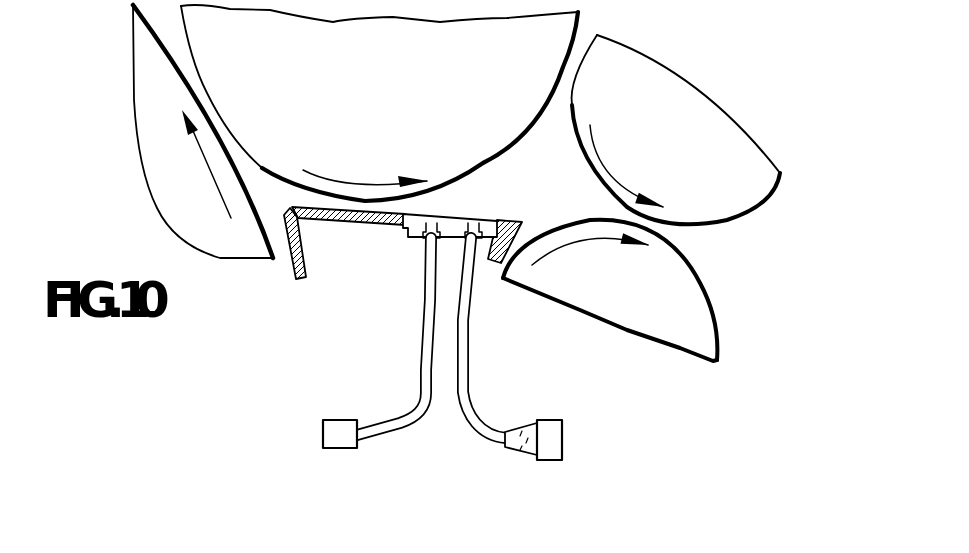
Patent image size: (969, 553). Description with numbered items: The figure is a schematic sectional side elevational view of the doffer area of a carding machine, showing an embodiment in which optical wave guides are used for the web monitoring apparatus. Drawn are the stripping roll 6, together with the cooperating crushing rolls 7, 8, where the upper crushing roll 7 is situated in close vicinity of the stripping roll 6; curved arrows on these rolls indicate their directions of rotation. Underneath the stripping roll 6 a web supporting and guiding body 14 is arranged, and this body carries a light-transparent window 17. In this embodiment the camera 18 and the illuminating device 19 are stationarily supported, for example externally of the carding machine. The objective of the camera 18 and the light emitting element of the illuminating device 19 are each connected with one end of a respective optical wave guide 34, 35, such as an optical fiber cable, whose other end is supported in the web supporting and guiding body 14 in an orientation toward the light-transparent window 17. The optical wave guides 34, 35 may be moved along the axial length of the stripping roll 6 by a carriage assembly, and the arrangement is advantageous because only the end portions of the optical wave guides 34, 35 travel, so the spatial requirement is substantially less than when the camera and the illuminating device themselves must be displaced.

The stripping roll 6 is at (560, 32).
The upper crushing roll 7 is at (733, 200).
The crushing roll 8 is at (637, 316).
The web supporting and guiding body 14 is at (366, 226).
The light-transparent window 17 is at (419, 237).
The camera 18 is at (564, 438).
The illuminating device 19 is at (335, 437).
The optical wave guide 34 is at (473, 413).
The optical wave guide 35 is at (383, 420).